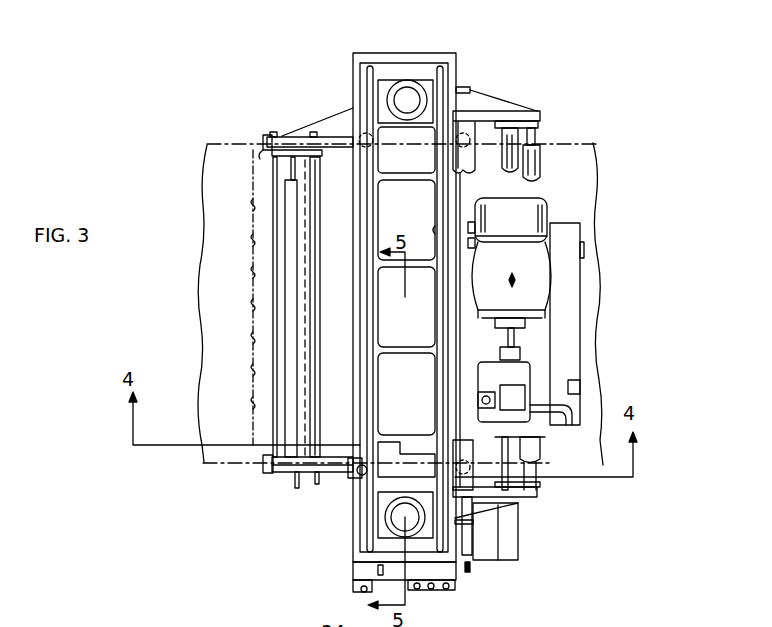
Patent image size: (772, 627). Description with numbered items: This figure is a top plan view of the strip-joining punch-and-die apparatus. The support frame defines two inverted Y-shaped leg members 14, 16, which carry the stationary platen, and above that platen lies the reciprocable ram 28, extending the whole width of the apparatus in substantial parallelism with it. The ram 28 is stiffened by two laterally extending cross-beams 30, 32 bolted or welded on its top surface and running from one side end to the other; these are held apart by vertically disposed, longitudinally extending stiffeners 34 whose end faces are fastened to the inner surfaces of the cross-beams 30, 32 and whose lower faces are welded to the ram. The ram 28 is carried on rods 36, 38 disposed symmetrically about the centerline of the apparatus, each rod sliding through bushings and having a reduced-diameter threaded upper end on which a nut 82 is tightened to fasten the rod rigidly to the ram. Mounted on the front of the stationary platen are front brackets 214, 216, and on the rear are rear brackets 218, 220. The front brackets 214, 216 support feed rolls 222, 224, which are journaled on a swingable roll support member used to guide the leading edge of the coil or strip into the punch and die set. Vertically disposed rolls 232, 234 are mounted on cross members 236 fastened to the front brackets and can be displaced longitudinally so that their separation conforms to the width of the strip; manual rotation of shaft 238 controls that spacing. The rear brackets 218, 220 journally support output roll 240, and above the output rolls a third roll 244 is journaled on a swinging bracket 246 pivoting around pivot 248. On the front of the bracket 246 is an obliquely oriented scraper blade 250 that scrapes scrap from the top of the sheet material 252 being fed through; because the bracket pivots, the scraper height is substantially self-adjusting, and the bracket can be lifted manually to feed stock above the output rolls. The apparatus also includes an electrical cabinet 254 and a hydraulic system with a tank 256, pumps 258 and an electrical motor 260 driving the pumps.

The leg member 14 is at (462, 580).
The leg member 16 is at (446, 56).
The reciprocable ram 28 is at (414, 336).
The laterally extending cross-beam 30 is at (378, 199).
The laterally extending cross-beam 32 is at (433, 236).
The longitudinally extending stiffener 34 is at (422, 436).
The rod 36 is at (388, 66).
The rod 38 is at (392, 518).
The nut 82 is at (410, 79).
The front bracket 214 is at (513, 508).
The front bracket 216 is at (504, 105).
The rear bracket 218 is at (332, 126).
The rear bracket 220 is at (332, 488).
The feed roll 222 is at (540, 170).
The feed roll 224 is at (508, 172).
The vertically disposed roll 232 is at (355, 462).
The vertically disposed roll 234 is at (362, 147).
The cross member 236 is at (462, 178).
The shaft 238 is at (472, 566).
The output roll 240 is at (316, 404).
The third roll 244 is at (285, 186).
The swinging bracket 246 is at (264, 139).
The pivot 248 is at (273, 390).
The scraper blade 250 is at (312, 212).
The sheet material 252 is at (197, 298).
The electrical cabinet 254 is at (490, 541).
The tank 256 is at (582, 318).
The pump 258 is at (520, 378).
The electrical motor 260 is at (538, 222).